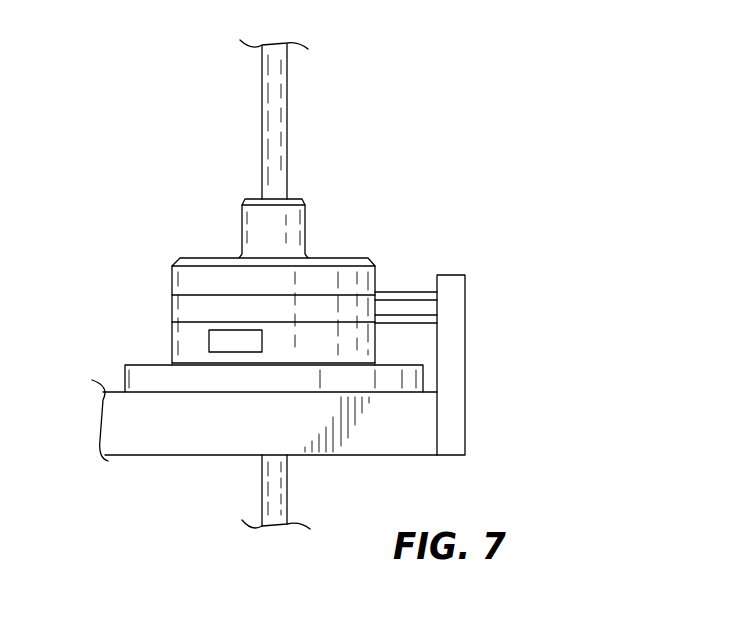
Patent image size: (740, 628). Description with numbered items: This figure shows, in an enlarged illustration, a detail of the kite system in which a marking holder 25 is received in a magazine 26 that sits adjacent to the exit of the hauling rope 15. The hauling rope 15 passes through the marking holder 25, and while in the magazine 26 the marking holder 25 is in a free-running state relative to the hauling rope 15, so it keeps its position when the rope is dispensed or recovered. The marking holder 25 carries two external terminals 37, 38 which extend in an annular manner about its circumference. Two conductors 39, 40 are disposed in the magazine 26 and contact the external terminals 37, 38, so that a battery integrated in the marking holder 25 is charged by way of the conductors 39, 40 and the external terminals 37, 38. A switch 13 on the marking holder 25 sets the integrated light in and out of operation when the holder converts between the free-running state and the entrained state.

The switch 13 is at (233, 345).
The hauling rope 15 is at (288, 125).
The marking holder 25 is at (217, 258).
The magazine 26 is at (540, 366).
The external terminal 37 is at (195, 295).
The external terminal 38 is at (193, 322).
The conductor 39 is at (412, 292).
The conductor 40 is at (413, 326).